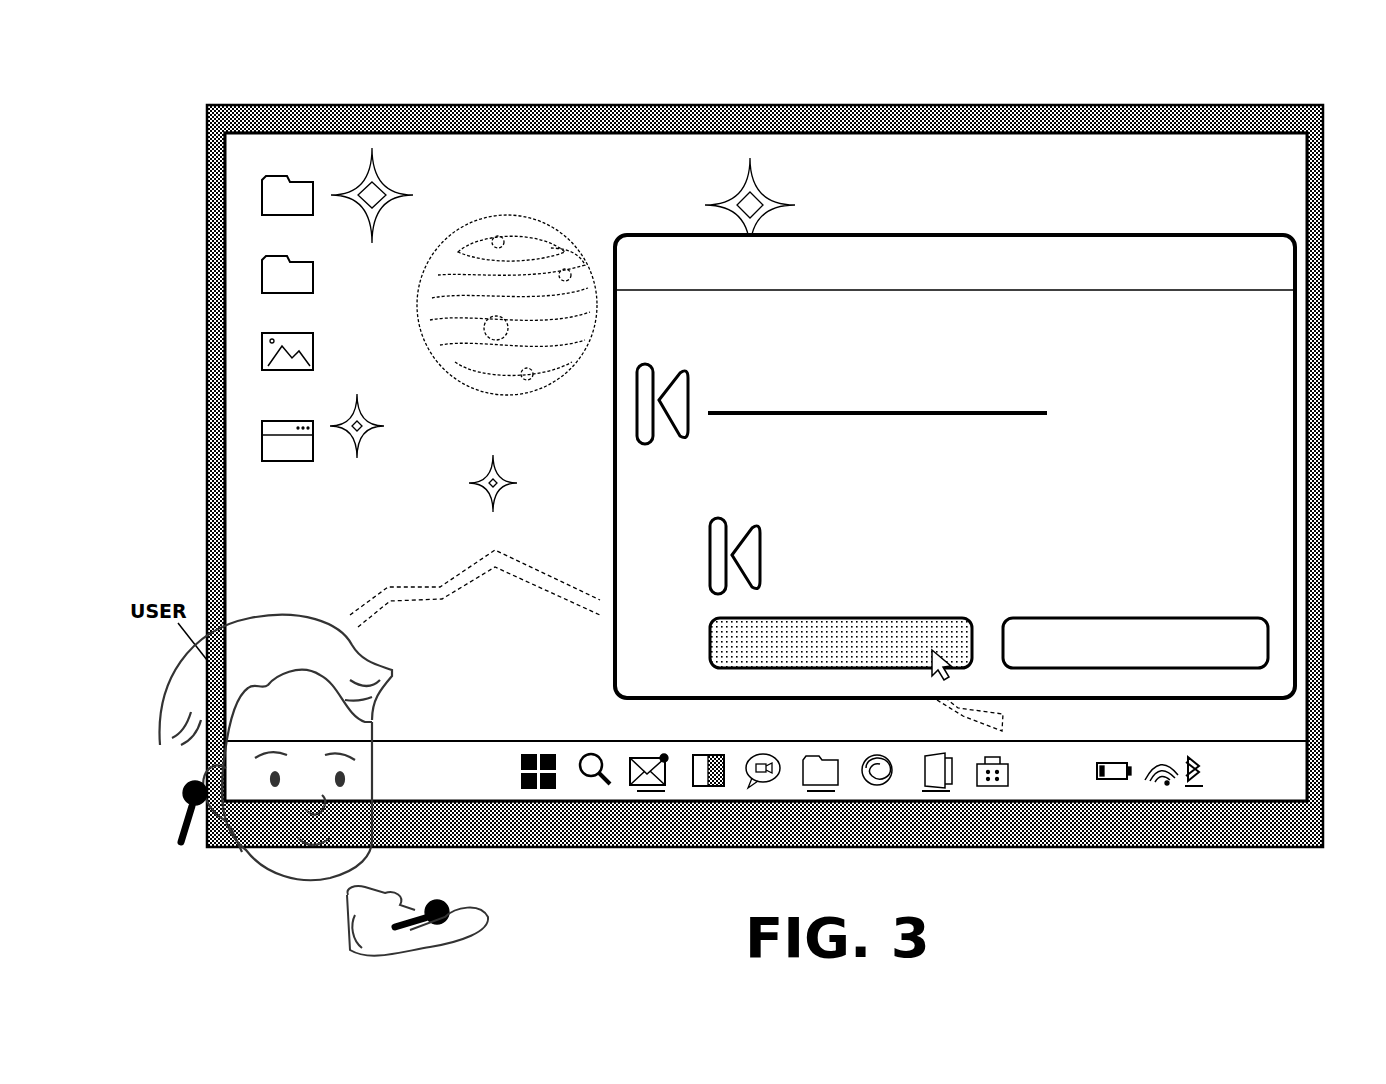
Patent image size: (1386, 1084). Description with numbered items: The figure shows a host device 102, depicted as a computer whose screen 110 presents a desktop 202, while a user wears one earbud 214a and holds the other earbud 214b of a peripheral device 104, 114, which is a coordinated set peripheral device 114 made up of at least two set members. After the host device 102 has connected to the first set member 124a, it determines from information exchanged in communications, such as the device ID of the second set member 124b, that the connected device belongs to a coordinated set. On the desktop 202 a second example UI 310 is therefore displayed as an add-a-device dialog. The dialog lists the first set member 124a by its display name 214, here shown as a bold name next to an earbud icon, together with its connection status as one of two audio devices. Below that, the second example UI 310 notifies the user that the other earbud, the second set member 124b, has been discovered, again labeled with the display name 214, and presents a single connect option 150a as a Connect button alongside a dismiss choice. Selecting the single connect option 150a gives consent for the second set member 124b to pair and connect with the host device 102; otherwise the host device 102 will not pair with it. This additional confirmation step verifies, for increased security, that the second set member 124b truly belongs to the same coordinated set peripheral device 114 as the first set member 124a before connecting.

The host device 102 is at (1350, 90).
The screen 110 is at (245, 130).
The desktop 202 is at (1121, 187).
The second example UI 310 is at (1265, 417).
The display name 214 is at (757, 365).
The first set member 124a is at (632, 392).
The second set member 124b is at (702, 560).
The single connect option 150a is at (930, 636).
The peripheral device 104 is at (233, 921).
The coordinated set peripheral device 114 is at (317, 835).
The first earbud 214a is at (190, 790).
The second earbud 214b is at (504, 894).